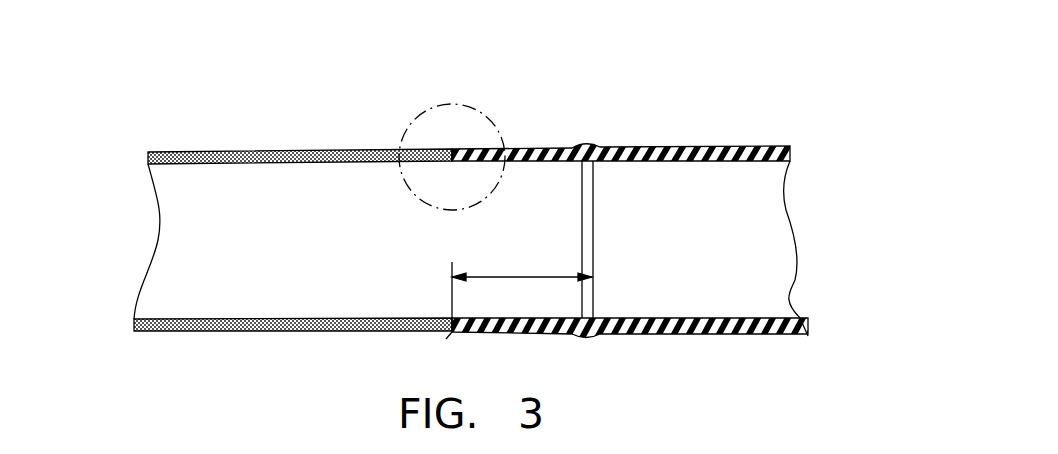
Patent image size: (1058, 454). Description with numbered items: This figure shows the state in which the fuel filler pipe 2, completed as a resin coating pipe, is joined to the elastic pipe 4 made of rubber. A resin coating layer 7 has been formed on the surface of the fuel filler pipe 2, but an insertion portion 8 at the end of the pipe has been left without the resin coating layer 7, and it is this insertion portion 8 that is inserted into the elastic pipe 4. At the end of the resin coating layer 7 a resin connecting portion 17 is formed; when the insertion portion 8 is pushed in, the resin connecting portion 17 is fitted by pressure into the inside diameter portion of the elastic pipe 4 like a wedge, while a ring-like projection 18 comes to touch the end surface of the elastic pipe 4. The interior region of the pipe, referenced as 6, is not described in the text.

The fuel filler pipe 2 is at (283, 195).
The elastic pipe 4 is at (603, 112).
The tube bore 6 is at (255, 181).
The resin coating layer 7 is at (318, 150).
The insertion portion 8 is at (522, 291).
The resin connecting portion 17 is at (463, 156).
The ring-like projection 18 is at (446, 146).